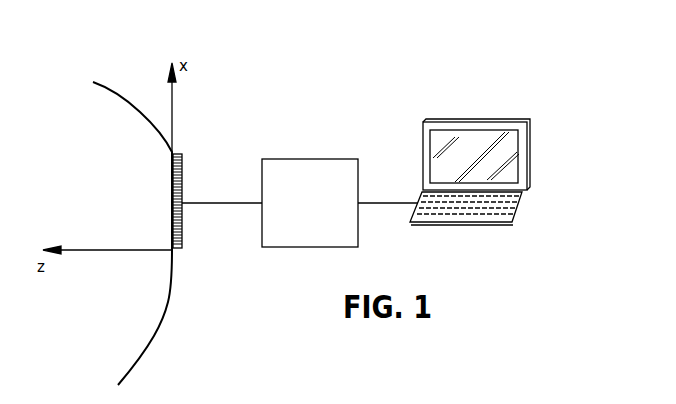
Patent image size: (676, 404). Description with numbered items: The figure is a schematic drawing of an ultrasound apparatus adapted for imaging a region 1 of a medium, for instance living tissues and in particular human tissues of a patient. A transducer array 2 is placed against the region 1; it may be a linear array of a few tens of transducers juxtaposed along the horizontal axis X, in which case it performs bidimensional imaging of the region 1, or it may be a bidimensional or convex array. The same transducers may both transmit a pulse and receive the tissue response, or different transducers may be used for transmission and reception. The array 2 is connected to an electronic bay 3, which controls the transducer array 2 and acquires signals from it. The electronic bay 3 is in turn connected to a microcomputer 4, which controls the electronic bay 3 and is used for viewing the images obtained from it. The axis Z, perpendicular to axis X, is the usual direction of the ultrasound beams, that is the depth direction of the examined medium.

The region 1 is at (143, 305).
The transducer array 2 is at (181, 234).
The electronic bay 3 is at (338, 159).
The microcomputer 4 is at (512, 119).